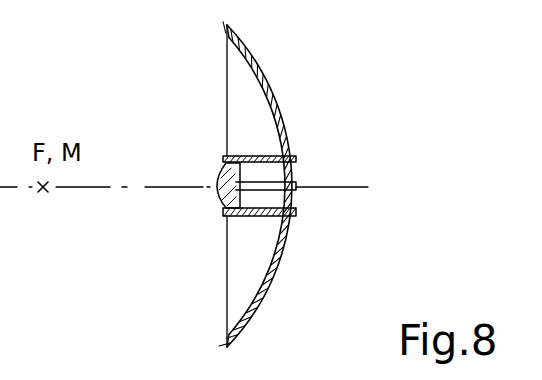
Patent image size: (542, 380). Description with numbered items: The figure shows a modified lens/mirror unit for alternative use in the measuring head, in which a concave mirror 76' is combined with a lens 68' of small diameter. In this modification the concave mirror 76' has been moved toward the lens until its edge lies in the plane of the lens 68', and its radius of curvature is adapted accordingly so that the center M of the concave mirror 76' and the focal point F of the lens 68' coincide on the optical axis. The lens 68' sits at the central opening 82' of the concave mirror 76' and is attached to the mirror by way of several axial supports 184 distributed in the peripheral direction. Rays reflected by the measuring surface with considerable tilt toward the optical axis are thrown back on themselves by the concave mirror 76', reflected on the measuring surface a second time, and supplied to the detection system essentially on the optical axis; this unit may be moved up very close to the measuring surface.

The concave mirror 76' is at (304, 176).
The axial supports 184 is at (258, 156).
The lens 68' is at (175, 225).
The central opening 82' is at (303, 234).